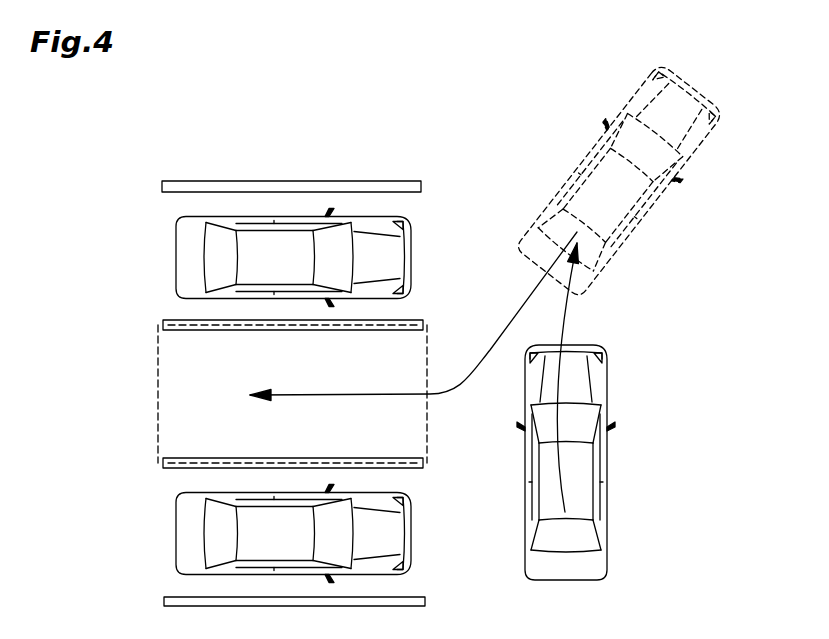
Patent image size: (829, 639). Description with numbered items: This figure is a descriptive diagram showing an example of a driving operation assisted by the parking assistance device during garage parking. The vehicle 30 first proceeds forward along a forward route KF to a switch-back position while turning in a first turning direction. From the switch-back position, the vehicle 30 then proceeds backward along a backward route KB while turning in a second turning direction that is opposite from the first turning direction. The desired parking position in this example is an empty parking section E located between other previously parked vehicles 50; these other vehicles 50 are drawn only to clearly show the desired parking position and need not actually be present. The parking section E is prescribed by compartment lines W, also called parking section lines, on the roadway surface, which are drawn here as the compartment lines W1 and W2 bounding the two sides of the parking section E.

The vehicle 30 is at (607, 483).
The other previously parked vehicles 50 is at (174, 257).
The compartment lines W is at (302, 182).
The compartment line W1 is at (177, 470).
The compartment line W2 is at (217, 330).
The parking section E is at (158, 403).
The backward route KB is at (463, 366).
The forward route KF is at (565, 310).